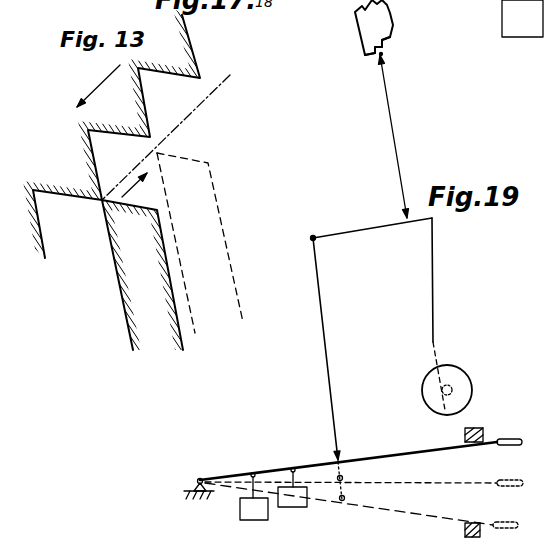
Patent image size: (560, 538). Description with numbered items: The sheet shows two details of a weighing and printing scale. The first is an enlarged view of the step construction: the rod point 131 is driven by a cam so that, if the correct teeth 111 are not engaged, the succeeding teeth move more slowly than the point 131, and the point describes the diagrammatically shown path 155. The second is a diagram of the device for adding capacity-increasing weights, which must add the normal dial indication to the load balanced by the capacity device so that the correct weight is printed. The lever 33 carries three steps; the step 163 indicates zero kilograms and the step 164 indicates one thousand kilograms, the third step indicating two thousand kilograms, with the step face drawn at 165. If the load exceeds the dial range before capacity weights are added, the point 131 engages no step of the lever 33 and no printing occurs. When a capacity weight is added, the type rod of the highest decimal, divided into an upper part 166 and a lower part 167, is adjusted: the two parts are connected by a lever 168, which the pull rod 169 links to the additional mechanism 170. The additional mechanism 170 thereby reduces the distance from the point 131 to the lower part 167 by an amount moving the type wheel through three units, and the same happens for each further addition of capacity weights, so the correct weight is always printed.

In FIG. 19, the lever 33 is at (367, 35).
In FIG. 13, the teeth 111 is at (53, 190).
In FIG. 13, the rod point 131 is at (161, 230).
In FIG. 19, the rod point 131 is at (383, 57).
In FIG. 13, the path 155 is at (187, 116).
In FIG. 19, the step 163 is at (377, 53).
In FIG. 19, the step 164 is at (382, 50).
In FIG. 19, the tooth face 165 is at (388, 39).
In FIG. 19, the upper part of type rod 166 is at (398, 160).
In FIG. 19, the lower part of type rod 167 is at (433, 283).
In FIG. 19, the lever 168 is at (357, 230).
In FIG. 19, the pull rod 169 is at (325, 347).
In FIG. 19, the additional mechanism 170 is at (389, 455).